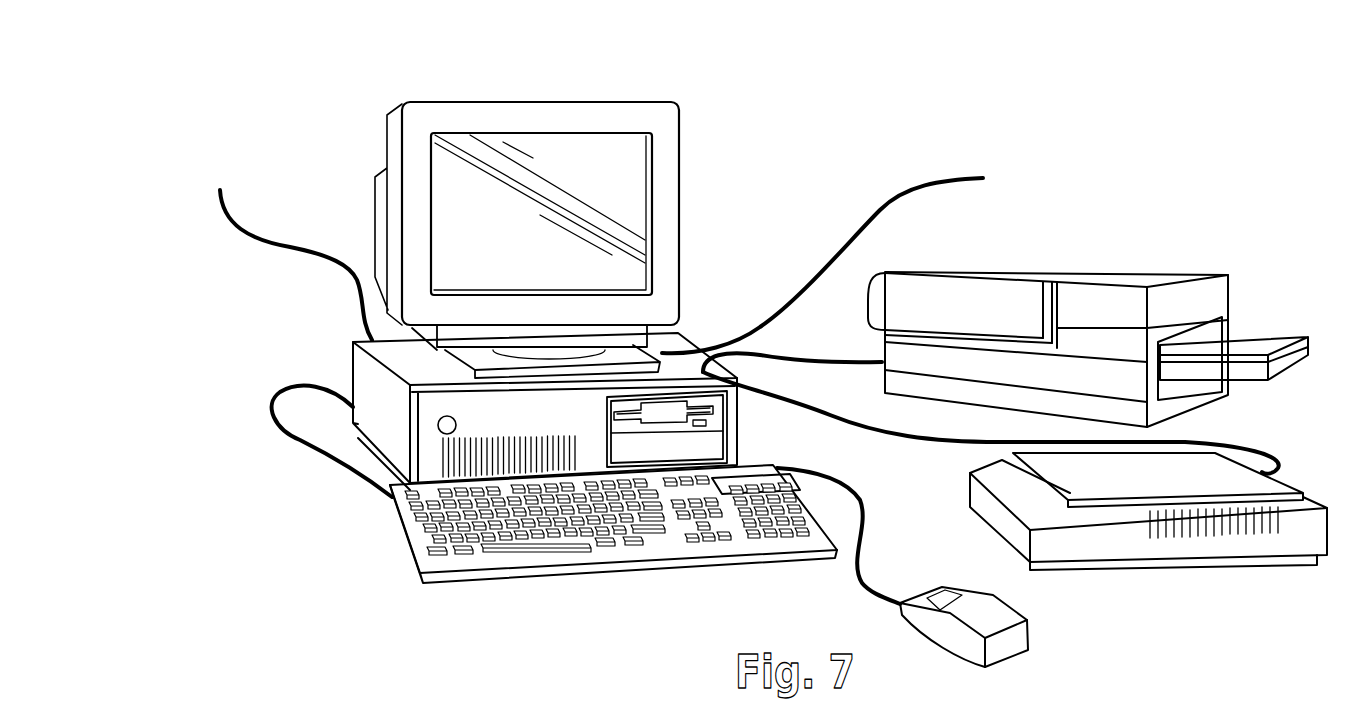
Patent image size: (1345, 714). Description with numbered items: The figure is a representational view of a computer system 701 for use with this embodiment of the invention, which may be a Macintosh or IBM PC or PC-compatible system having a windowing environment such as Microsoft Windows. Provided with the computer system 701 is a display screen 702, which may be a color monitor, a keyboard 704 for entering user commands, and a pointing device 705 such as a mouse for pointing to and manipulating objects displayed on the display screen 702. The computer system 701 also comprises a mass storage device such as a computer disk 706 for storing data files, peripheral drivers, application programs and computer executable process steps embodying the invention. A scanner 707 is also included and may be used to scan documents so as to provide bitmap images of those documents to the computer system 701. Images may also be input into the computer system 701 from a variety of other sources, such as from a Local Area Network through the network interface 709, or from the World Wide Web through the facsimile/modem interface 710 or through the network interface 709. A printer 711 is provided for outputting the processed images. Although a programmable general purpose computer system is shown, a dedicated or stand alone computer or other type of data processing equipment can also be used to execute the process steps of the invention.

The computer system 701 is at (800, 128).
The display screen 702 is at (548, 100).
The keyboard 704 is at (600, 582).
The pointing device 705 is at (1008, 660).
The computer disk 706 is at (690, 442).
The scanner 707 is at (1173, 572).
The network interface 709 is at (910, 190).
The facsimile/modem interface 710 is at (280, 250).
The printer 711 is at (1080, 272).